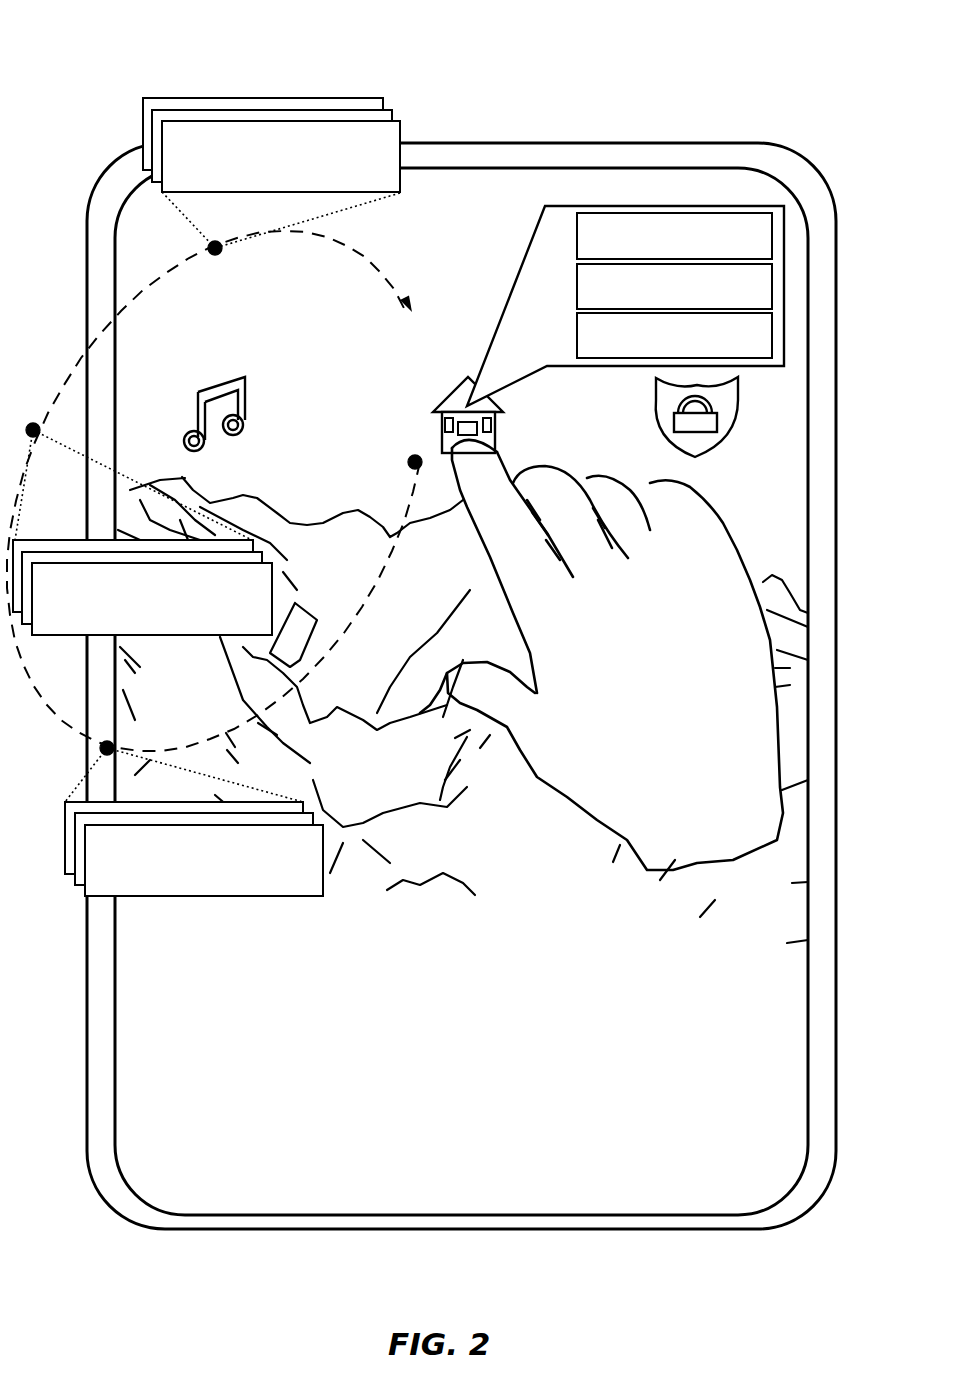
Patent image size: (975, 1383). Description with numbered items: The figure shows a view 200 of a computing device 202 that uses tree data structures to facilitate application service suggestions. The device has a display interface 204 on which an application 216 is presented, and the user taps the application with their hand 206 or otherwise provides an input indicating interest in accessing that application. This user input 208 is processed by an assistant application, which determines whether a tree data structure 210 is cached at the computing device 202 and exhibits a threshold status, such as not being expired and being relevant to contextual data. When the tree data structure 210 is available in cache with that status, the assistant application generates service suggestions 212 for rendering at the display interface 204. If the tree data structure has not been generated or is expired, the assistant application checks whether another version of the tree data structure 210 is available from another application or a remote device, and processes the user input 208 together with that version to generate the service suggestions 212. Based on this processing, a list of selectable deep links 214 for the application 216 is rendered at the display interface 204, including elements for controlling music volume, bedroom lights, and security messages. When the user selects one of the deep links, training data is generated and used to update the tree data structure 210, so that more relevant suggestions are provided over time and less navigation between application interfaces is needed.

The view 200 is at (122, 65).
The computing device 202 is at (678, 142).
The display interface 204 is at (291, 315).
The hand 206 is at (688, 664).
The user input 208 is at (190, 881).
The tree data structure 210 is at (138, 631).
The service suggestions 212 is at (267, 188).
The list of selectable deep links 214 is at (532, 322).
The application 216 is at (440, 400).